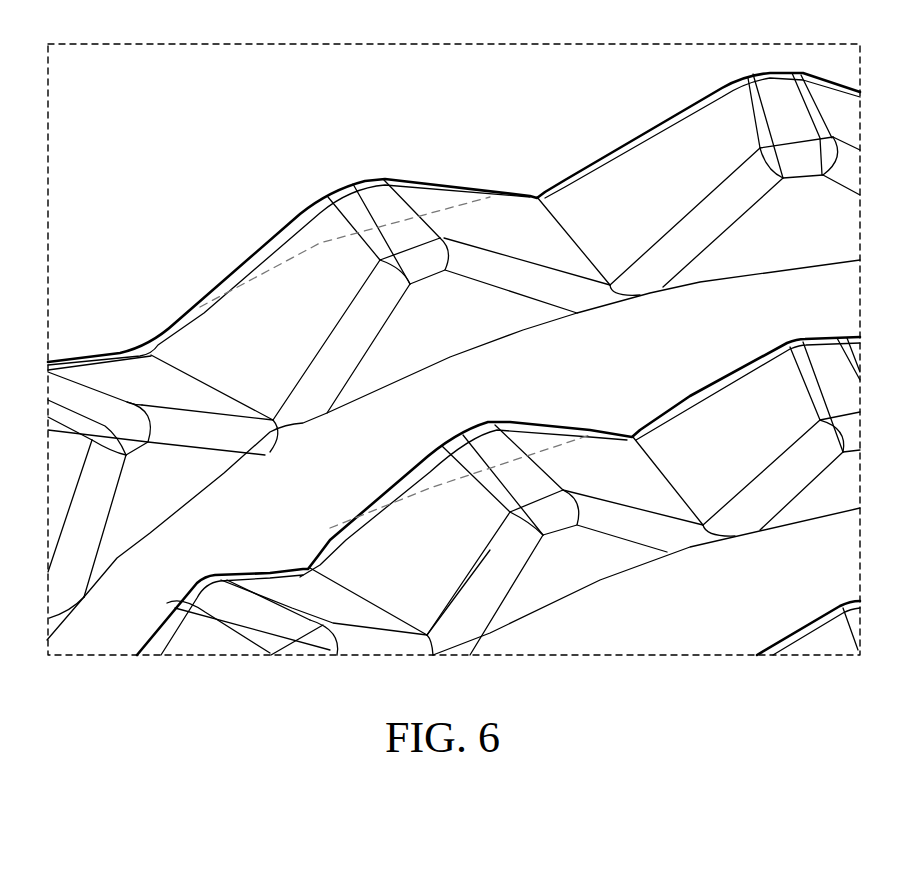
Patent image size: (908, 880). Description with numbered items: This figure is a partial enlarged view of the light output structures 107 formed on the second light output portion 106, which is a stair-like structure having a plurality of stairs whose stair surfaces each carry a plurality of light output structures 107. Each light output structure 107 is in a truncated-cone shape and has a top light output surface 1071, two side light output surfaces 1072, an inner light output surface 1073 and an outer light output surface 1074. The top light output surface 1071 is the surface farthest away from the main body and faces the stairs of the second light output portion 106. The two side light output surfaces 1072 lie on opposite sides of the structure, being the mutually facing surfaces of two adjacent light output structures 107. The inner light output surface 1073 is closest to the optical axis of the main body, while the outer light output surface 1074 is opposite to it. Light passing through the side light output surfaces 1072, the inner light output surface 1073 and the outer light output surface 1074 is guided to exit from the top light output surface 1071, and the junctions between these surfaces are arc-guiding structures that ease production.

The second light output portion 106 is at (278, 330).
The light output structure 107 is at (500, 170).
The top light output surface 1071 is at (370, 203).
The side light output surface 1072 is at (513, 207).
The inner light output surface 1073 is at (433, 352).
The outer light output surface 1074 is at (442, 198).